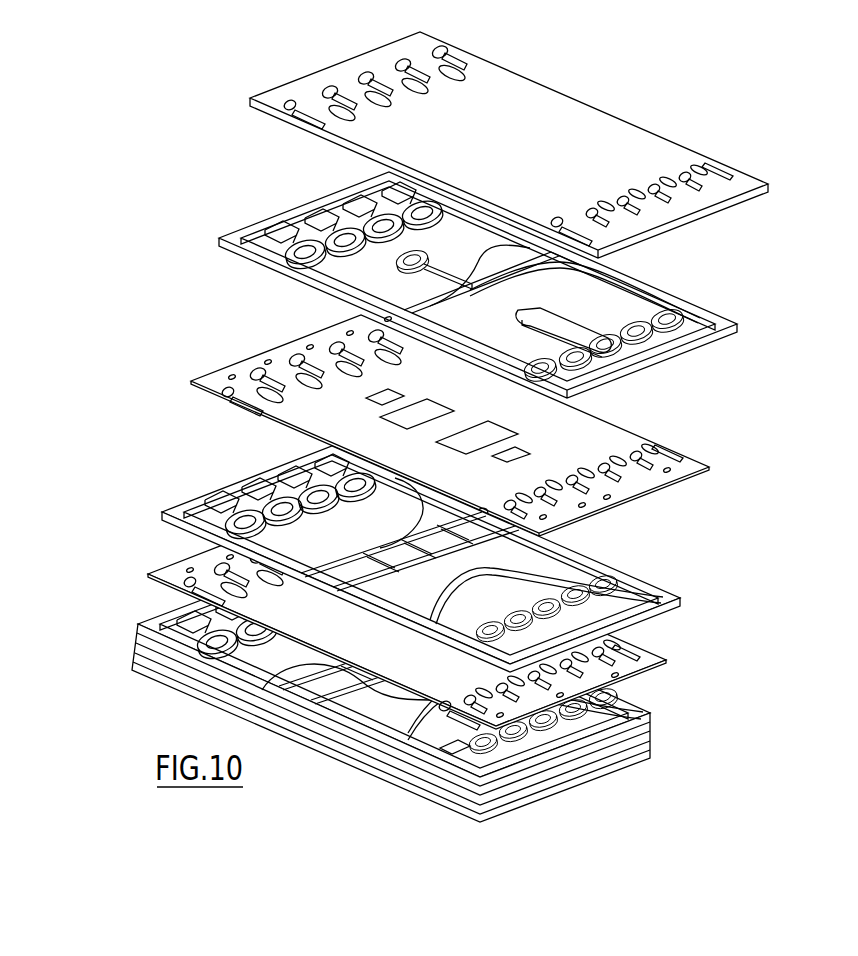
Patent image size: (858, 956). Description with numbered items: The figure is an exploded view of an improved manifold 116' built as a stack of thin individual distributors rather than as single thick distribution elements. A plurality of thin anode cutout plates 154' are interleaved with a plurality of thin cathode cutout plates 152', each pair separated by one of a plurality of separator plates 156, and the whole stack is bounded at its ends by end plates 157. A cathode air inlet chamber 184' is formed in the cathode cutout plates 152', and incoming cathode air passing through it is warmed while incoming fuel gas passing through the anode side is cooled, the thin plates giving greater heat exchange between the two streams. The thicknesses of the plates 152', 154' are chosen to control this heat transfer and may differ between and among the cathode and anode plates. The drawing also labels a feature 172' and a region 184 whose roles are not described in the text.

The improved manifold 116' is at (468, 445).
The end plates 157 is at (528, 163).
The cathode air inlet chamber 184' is at (623, 316).
The thin cathode cutout plates 152' is at (526, 483).
The separator plates 156 is at (700, 470).
The recess in second contact carrier 172' is at (568, 584).
The thin anode cutout plates 154' is at (501, 657).
The recess 184 is at (514, 719).